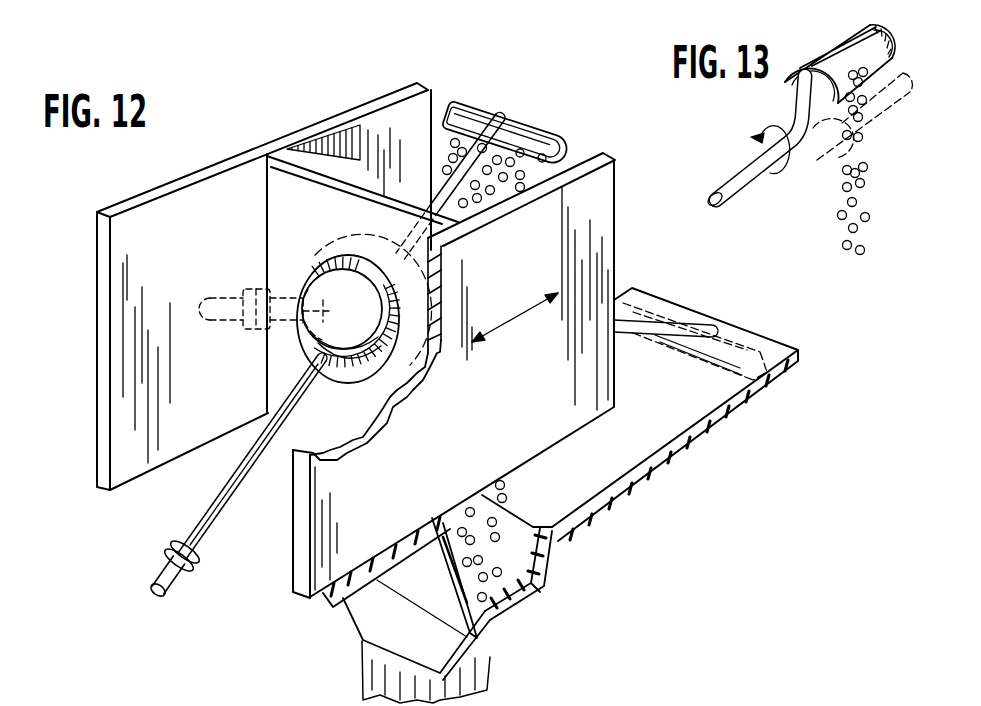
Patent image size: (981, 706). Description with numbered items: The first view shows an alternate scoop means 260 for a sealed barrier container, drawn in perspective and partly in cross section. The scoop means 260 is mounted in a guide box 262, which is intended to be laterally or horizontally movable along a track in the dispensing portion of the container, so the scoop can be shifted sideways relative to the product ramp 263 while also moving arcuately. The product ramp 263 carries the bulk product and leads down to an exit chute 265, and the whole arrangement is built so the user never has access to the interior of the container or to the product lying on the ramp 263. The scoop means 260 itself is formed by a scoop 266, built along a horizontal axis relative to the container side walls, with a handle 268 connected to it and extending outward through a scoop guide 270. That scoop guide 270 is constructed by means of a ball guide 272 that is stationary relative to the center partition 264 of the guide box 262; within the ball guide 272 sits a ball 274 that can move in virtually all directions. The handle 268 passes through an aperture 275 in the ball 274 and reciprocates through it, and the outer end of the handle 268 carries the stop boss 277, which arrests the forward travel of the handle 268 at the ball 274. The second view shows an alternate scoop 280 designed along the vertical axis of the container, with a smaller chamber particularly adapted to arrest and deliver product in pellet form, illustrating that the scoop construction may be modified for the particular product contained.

In FIG. 12, the scoop means 260 is at (471, 160).
In FIG. 12, the guide box 262 is at (288, 131).
In FIG. 12, the product ramp 263 is at (678, 415).
In FIG. 12, the center partition 264 is at (285, 155).
In FIG. 12, the exit chute 265 is at (503, 573).
In FIG. 12, the scoop 266 is at (542, 133).
In FIG. 12, the handle 268 is at (444, 190).
In FIG. 12, the scoop guide 270 is at (313, 257).
In FIG. 12, the ball guide 272 is at (362, 258).
In FIG. 12, the ball 274 is at (307, 340).
In FIG. 12, the aperture 275 is at (312, 372).
In FIG. 12, the handle knob 277 is at (201, 563).
In FIG. 13, the scoop 280 is at (837, 55).